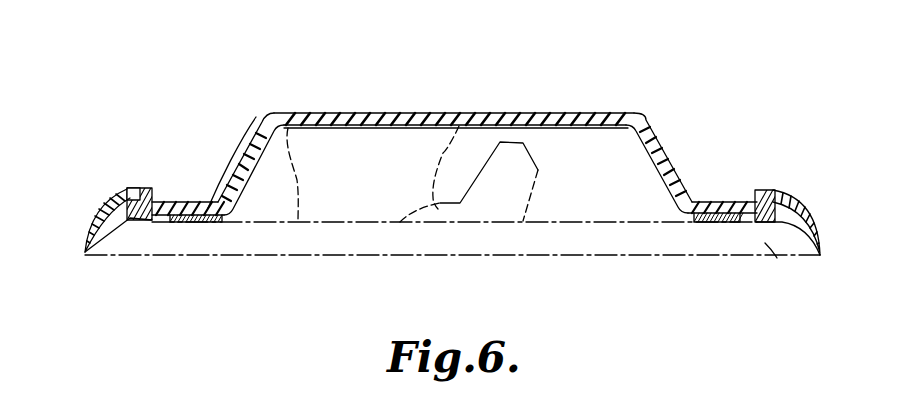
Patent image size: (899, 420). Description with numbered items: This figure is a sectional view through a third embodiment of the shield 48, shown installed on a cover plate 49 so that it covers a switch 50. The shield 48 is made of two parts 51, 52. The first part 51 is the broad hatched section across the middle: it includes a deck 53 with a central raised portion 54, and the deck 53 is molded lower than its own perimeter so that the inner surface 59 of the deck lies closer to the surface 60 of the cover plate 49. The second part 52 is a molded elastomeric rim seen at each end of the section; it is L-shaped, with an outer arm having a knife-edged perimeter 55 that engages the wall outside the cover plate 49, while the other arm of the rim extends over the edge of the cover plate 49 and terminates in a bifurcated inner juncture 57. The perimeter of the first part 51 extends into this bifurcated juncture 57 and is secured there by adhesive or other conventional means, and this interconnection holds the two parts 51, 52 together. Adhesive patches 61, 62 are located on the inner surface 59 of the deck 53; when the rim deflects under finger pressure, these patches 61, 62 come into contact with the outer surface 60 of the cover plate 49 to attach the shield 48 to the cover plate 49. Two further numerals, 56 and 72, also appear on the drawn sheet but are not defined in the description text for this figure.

The shield 48 is at (516, 106).
The cover plate 49 is at (773, 255).
The switch 50 is at (459, 112).
The first part 51 is at (608, 108).
The second part 52 is at (105, 196).
The deck 53 is at (712, 201).
The central raised portion 54 is at (365, 122).
The knife-edged perimeter 55 is at (92, 233).
The lip 56 is at (815, 222).
The bifurcated inner juncture 57 is at (147, 187).
The inner surface 59 is at (218, 219).
The surface 60 is at (288, 113).
The adhesive patch 61 is at (183, 217).
The adhesive patch 62 is at (756, 206).
The reference numeral (partial, adjacent figure) 72 is at (10, 8).